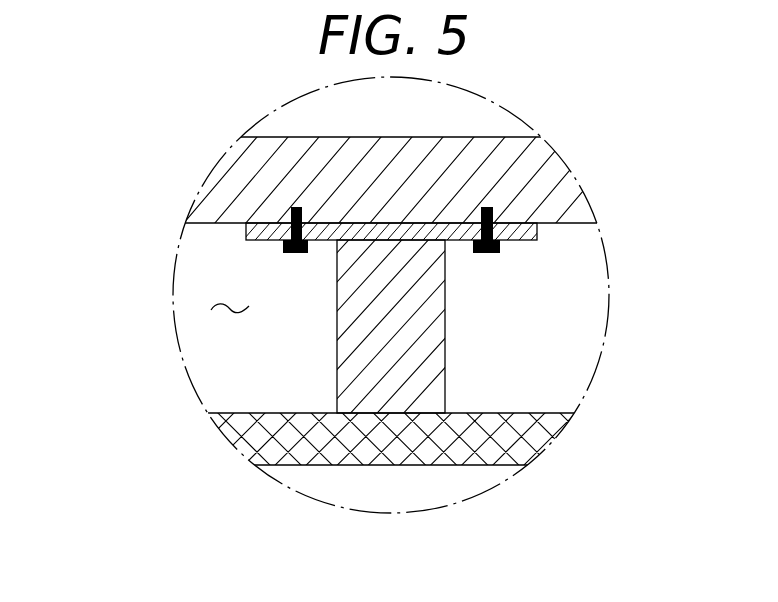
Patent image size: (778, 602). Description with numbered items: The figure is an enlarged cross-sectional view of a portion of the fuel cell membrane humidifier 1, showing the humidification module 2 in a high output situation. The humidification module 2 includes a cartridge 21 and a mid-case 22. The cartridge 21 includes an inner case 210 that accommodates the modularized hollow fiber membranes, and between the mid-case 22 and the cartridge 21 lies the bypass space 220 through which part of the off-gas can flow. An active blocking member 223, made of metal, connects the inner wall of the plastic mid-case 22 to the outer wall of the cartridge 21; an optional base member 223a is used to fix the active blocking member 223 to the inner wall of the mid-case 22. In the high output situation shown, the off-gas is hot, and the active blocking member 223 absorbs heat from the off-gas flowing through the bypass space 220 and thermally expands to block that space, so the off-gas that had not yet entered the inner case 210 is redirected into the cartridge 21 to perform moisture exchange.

The apparatus 1 is at (74, 100).
The humidification module 2 is at (95, 222).
The cartridge 21 is at (214, 436).
The mid-case 22 is at (195, 191).
The inner case 210 is at (453, 438).
The bypass space 220 is at (235, 300).
The active blocking member 223 is at (386, 397).
The base member 223a is at (538, 233).